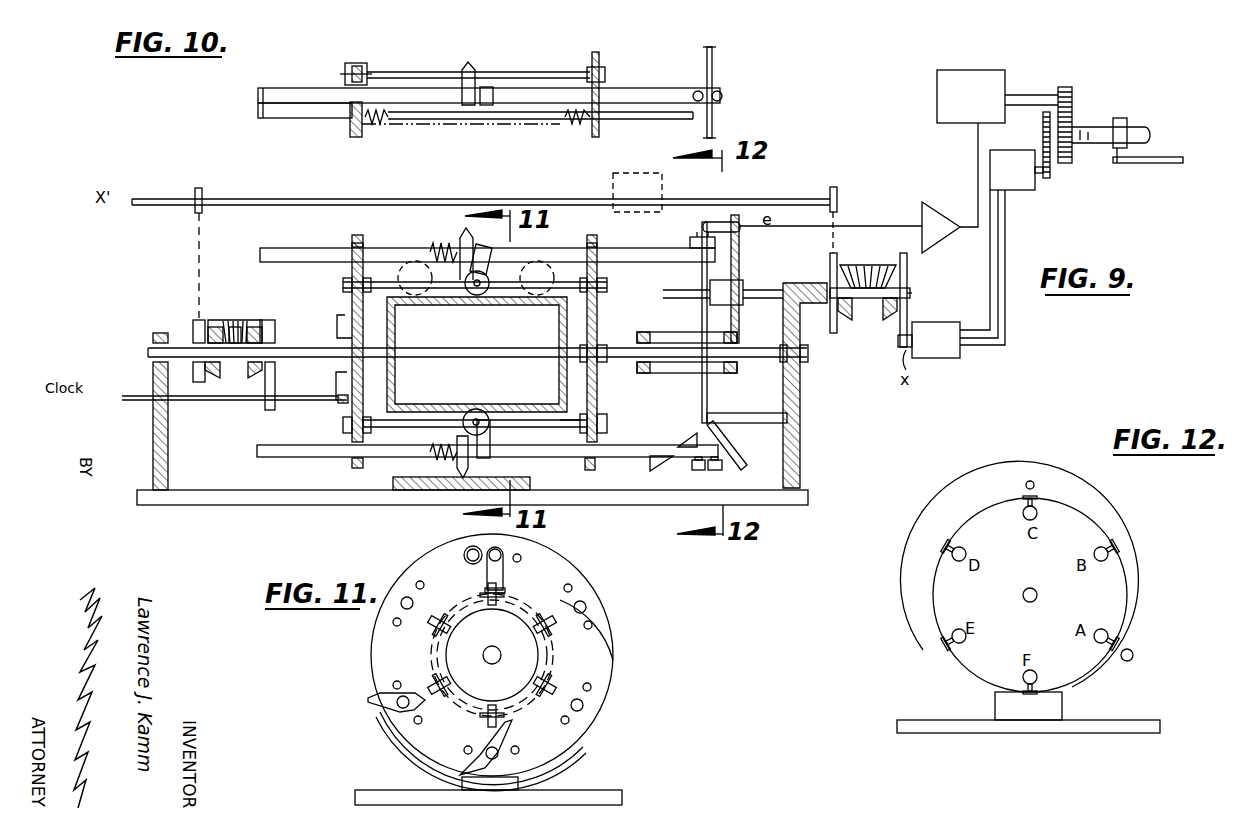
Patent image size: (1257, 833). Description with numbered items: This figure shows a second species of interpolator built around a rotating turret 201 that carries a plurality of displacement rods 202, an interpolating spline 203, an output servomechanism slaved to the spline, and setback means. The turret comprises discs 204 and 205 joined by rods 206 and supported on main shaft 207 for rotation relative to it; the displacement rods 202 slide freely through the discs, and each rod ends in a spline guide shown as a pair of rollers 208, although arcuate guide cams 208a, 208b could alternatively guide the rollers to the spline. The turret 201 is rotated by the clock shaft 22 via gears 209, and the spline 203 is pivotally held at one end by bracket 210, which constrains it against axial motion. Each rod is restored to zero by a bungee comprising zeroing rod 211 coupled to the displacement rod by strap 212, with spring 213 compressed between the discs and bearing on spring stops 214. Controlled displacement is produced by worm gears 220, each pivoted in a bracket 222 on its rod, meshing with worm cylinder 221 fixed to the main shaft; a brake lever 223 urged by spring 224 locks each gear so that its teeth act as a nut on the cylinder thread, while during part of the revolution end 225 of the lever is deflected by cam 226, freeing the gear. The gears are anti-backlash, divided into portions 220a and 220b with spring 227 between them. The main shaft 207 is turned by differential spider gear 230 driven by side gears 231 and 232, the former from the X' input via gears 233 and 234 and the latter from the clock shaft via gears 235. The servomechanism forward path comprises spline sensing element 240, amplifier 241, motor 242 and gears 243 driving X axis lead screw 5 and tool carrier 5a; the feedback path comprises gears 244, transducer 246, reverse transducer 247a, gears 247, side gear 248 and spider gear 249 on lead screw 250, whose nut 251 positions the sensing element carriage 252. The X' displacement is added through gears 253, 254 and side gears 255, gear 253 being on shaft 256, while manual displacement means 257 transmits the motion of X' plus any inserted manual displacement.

In FIG. 9, the X axis lead screw 5 is at (1093, 144).
In FIG. 9, the tool carrier 5a is at (1123, 121).
In FIG. 9, the clock shaft 22 is at (141, 401).
In FIG. 9, the rotating turret 201 is at (576, 480).
In FIG. 11, the rotating turret 201 is at (492, 655).
In FIG. 10, the displacement rods 202 is at (296, 88).
In FIG. 9, the displacement rods 202 is at (653, 260).
In FIG. 11, the displacement rods 202 is at (503, 555).
In FIG. 12, the displacement rods 202 is at (1037, 512).
In FIG. 10, the interpolating spline 203 is at (712, 56).
In FIG. 9, the interpolating spline 203 is at (703, 396).
In FIG. 12, the interpolating spline 203 is at (1138, 636).
In FIG. 10, the disc 204 is at (596, 52).
In FIG. 9, the disc 204 is at (590, 471).
In FIG. 11, the disc 204 is at (488, 669).
In FIG. 12, the disc 204 is at (1075, 680).
In FIG. 10, the disc 205 is at (353, 63).
In FIG. 9, the disc 205 is at (352, 463).
In FIG. 11, the disc 205 is at (582, 580).
In FIG. 10, the rods 206 is at (401, 72).
In FIG. 9, the rods 206 is at (573, 423).
In FIG. 11, the rods 206 is at (521, 560).
In FIG. 9, the main shaft 207 is at (148, 352).
In FIG. 10, the rollers 208 is at (697, 91).
In FIG. 9, the rollers 208 is at (721, 469).
In FIG. 12, the rollers 208 is at (1112, 550).
In FIG. 9, the arcuate guide cam 208a is at (731, 456).
In FIG. 9, the arcuate guide cam 208b is at (695, 437).
In FIG. 9, the gears 209 is at (336, 401).
In FIG. 9, the bracket 210 is at (761, 413).
In FIG. 12, the bracket 210 is at (1130, 661).
In FIG. 10, the zeroing rod 211 is at (303, 119).
In FIG. 10, the strap 212 is at (258, 104).
In FIG. 10, the spring 213 is at (389, 123).
In FIG. 10, the spring stops 214 is at (352, 131).
In FIG. 9, the worm gears 220 is at (479, 411).
In FIG. 11, the worm gears 220 is at (435, 680).
In FIG. 11, the gear portion 220a is at (575, 608).
In FIG. 11, the gear portion 220b is at (613, 652).
In FIG. 9, the worm cylinder 221 is at (441, 409).
In FIG. 9, the bracket 222 is at (488, 431).
In FIG. 11, the bracket 222 is at (487, 555).
In FIG. 9, the brake lever 223 is at (469, 466).
In FIG. 11, the brake lever 223 is at (395, 705).
In FIG. 9, the spring 224 is at (441, 456).
In FIG. 9, the lever end 225 is at (456, 491).
In FIG. 11, the lever end 225 is at (380, 705).
In FIG. 9, the cam 226 is at (396, 485).
In FIG. 11, the cam 226 is at (395, 740).
In FIG. 11, the spring 227 is at (600, 622).
In FIG. 9, the differential spider gear 230 is at (241, 320).
In FIG. 9, the side gear 231 is at (193, 336).
In FIG. 9, the side gear 232 is at (266, 333).
In FIG. 9, the gears 233 is at (196, 206).
In FIG. 9, the gears 234 is at (198, 383).
In FIG. 9, the gears 235 is at (318, 381).
In FIG. 9, the spline sensing element 240 is at (716, 222).
In FIG. 12, the spline sensing element 240 is at (1032, 480).
In FIG. 9, the amplifier 241 is at (923, 228).
In FIG. 9, the machine tool displacement motor 242 is at (937, 104).
In FIG. 9, the gears 243 is at (1125, 103).
In FIG. 9, the gears 244 is at (1050, 161).
In FIG. 9, the transducer 246 is at (1014, 190).
In FIG. 9, the gears 247 is at (900, 338).
In FIG. 9, the reverse transducer 247a is at (936, 322).
In FIG. 9, the differential side gear 248 is at (899, 280).
In FIG. 9, the spider gear 249 is at (909, 292).
In FIG. 9, the lead screw 250 is at (871, 299).
In FIG. 9, the nut 251 is at (741, 291).
In FIG. 9, the sensing element carriage 252 is at (786, 385).
In FIG. 9, the gear 253 is at (838, 196).
In FIG. 9, the gear 254 is at (830, 271).
In FIG. 9, the side gear 255 is at (856, 283).
In FIG. 9, the shaft 256 is at (801, 199).
In FIG. 9, the manual displacement means 257 is at (613, 190).